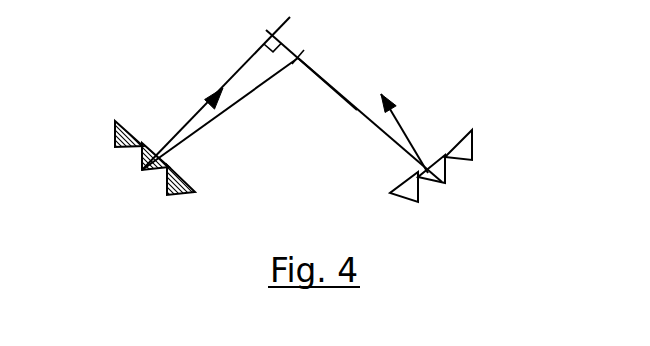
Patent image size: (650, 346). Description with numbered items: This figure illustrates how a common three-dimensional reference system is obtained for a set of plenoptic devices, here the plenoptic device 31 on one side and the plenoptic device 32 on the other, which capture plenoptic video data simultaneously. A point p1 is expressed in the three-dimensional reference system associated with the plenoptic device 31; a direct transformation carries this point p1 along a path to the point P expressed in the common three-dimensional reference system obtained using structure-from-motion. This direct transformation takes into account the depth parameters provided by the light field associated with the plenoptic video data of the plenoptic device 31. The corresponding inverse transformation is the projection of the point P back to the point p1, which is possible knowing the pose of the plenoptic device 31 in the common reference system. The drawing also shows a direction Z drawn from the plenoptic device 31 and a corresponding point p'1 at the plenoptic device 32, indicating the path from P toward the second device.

The plenoptic device 31 is at (116, 148).
The plenoptic device 32 is at (472, 157).
The point expressed in the common 3D reference system P is at (310, 70).
The axis direction normal to reflecting surface Z is at (216, 93).
The point expressed in the 3D reference system of the plenoptic device p1 is at (220, 116).
The reflected ray toward second optical element p'1 is at (370, 120).